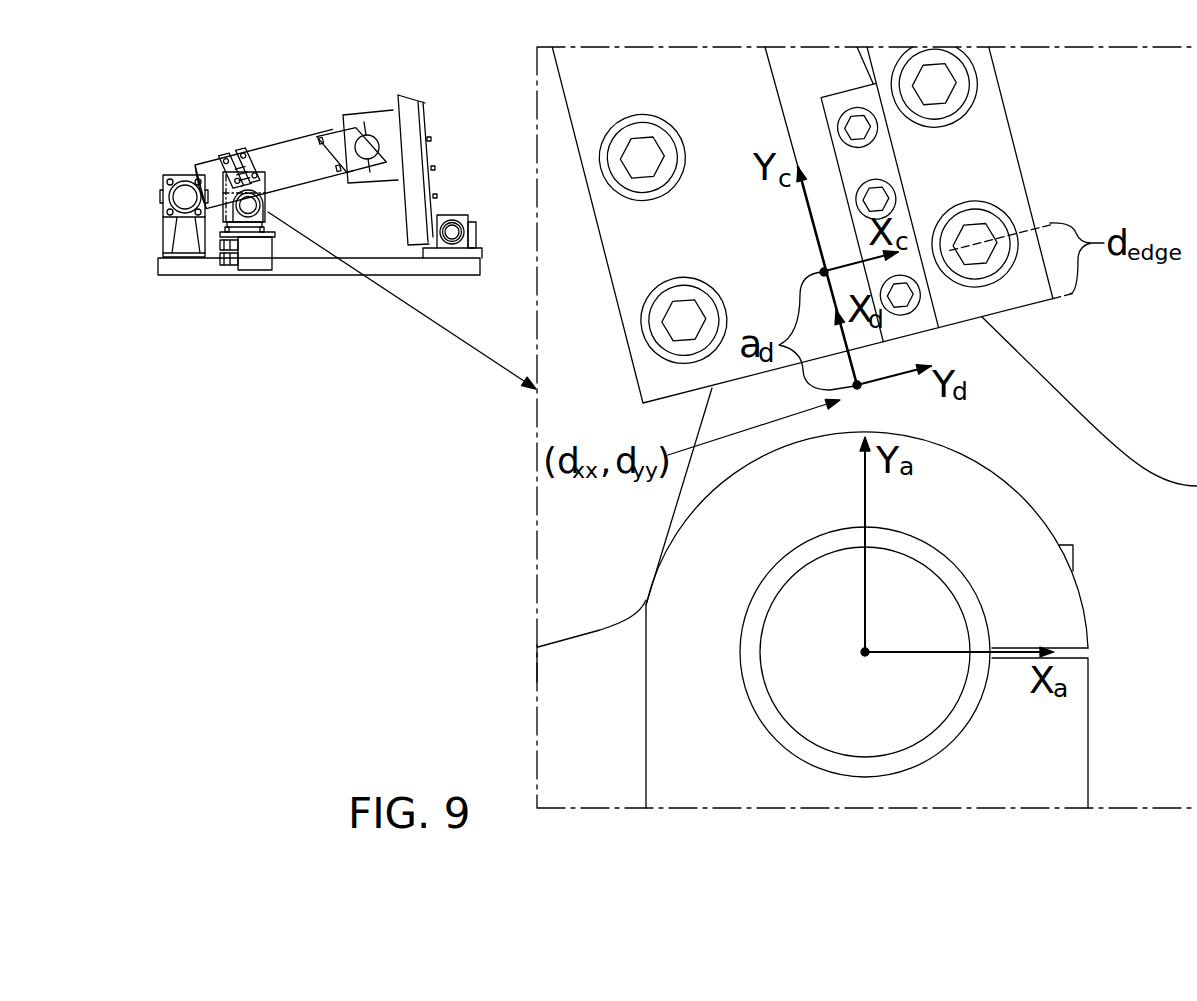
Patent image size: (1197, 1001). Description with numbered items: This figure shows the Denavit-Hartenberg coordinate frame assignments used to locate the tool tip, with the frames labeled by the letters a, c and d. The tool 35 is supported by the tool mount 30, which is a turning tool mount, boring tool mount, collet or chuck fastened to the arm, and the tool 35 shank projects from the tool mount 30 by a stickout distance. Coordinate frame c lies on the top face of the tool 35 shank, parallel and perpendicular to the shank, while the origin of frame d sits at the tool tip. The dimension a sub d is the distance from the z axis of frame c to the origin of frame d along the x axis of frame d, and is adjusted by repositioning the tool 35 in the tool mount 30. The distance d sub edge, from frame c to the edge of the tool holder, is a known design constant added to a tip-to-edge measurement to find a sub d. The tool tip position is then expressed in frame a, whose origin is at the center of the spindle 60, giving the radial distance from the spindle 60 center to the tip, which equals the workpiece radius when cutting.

The tool mount 30 is at (1014, 144).
The tool 35 is at (866, 358).
The spindle 60 is at (1050, 525).